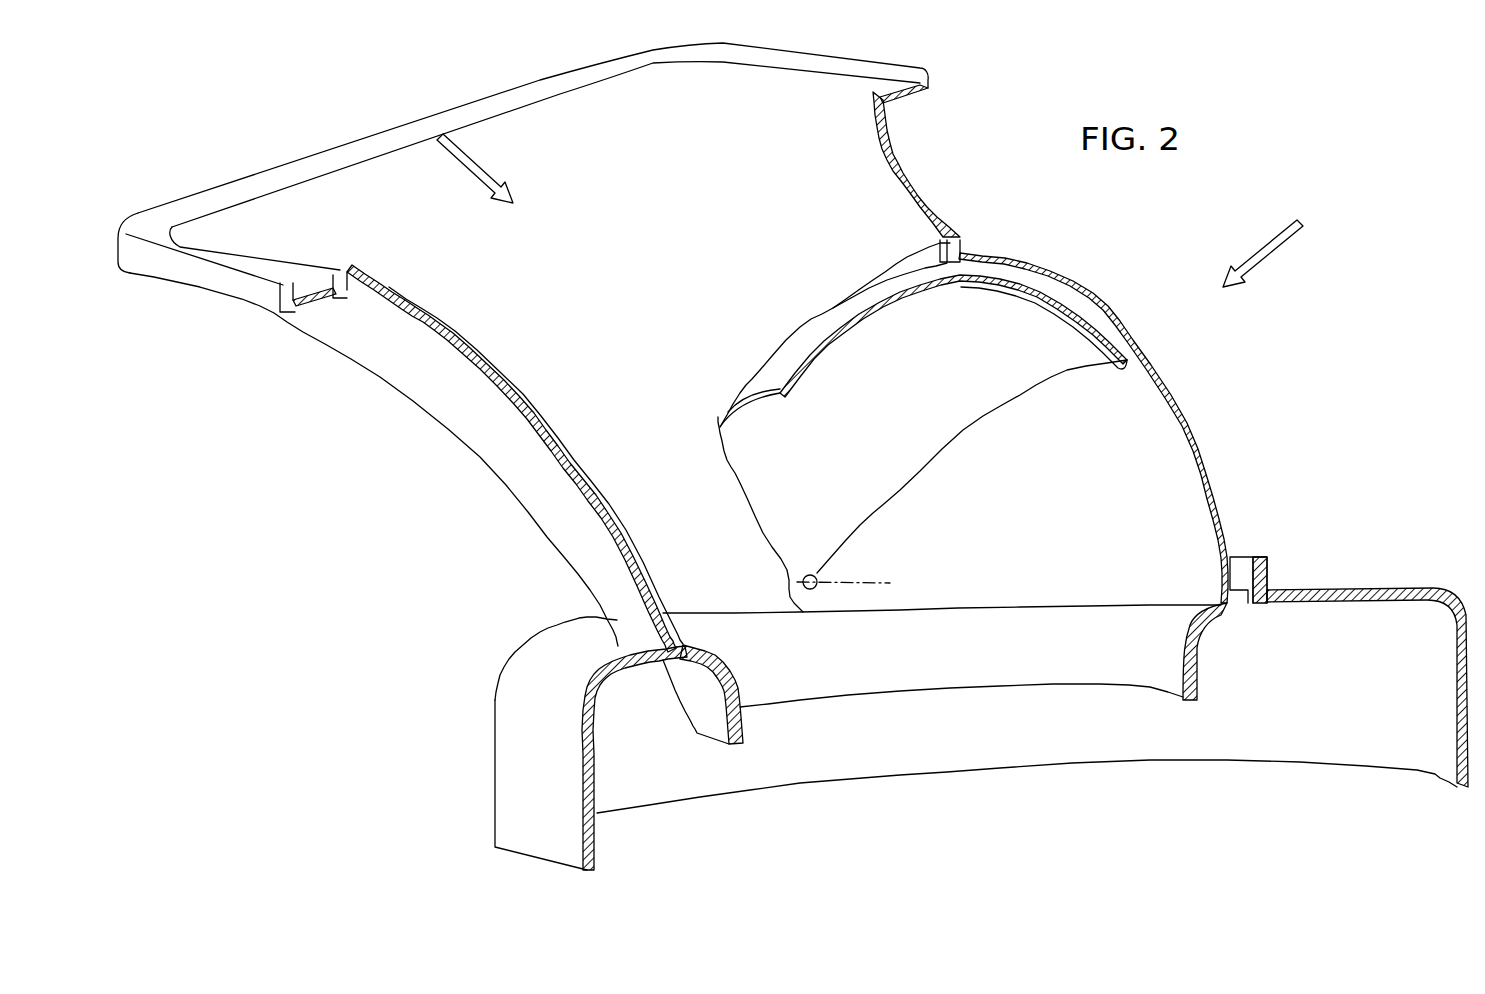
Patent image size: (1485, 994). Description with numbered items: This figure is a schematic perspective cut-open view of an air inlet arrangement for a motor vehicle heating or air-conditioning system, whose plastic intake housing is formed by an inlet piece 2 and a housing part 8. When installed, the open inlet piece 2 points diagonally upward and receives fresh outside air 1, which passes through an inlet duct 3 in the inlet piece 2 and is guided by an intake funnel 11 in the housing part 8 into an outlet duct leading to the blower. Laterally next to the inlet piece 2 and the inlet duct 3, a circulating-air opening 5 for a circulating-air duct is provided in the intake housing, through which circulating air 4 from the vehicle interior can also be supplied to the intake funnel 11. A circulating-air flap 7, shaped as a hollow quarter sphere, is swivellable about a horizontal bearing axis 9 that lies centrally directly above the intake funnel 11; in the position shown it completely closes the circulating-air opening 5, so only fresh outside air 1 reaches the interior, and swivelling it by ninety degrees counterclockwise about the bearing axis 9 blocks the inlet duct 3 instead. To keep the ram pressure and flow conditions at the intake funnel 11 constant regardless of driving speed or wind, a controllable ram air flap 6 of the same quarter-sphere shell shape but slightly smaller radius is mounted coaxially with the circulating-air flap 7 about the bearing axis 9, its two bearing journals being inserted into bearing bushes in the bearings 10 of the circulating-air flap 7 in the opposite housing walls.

The fresh outside air 1 is at (481, 154).
The inlet piece 2 is at (757, 60).
The inlet duct 3 is at (694, 258).
The circulating air 4 is at (1277, 257).
The circulating-air opening 5 is at (1237, 503).
The ram air flap 6 is at (780, 370).
The circulating-air flap 7 is at (1170, 437).
The housing part 8 is at (518, 770).
The bearing axis 9 is at (867, 582).
The bearings 10 is at (810, 561).
The intake funnel 11 is at (974, 668).